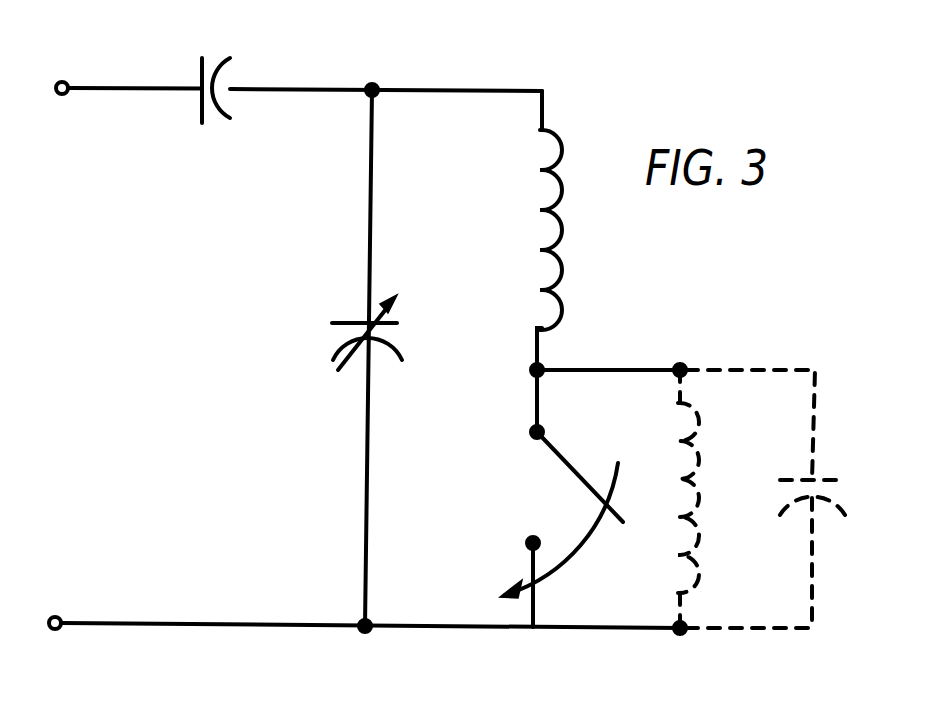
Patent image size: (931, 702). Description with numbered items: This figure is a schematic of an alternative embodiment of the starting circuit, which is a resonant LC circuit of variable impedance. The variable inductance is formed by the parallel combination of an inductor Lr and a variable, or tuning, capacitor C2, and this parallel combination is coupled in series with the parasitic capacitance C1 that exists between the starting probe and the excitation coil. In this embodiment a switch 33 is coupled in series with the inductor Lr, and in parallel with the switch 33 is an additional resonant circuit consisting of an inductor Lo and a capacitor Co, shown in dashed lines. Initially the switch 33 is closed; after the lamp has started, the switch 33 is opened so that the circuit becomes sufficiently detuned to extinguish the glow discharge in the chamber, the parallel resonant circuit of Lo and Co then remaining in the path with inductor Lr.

The switch 33 is at (572, 462).
The parasitic capacitance C1 is at (218, 66).
The variable capacitor C2 is at (386, 332).
The inductor Lr is at (567, 230).
The additional resonant circuit inductor Lo is at (708, 499).
The additional resonant circuit capacitor Co is at (781, 499).